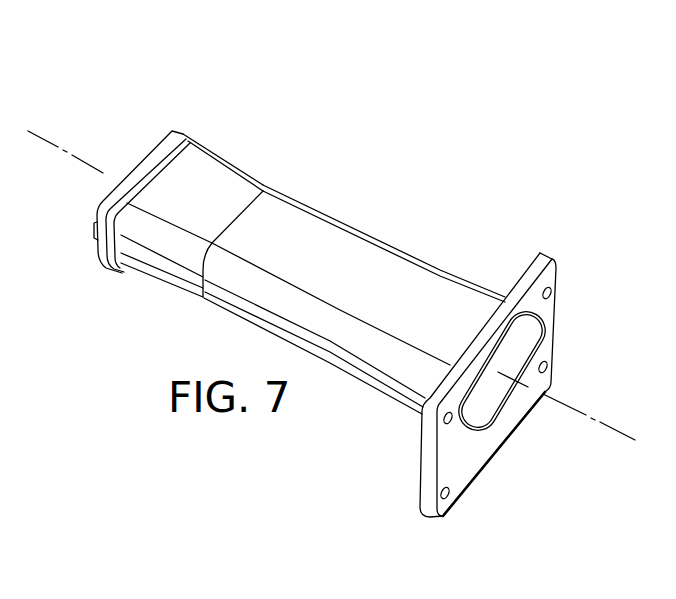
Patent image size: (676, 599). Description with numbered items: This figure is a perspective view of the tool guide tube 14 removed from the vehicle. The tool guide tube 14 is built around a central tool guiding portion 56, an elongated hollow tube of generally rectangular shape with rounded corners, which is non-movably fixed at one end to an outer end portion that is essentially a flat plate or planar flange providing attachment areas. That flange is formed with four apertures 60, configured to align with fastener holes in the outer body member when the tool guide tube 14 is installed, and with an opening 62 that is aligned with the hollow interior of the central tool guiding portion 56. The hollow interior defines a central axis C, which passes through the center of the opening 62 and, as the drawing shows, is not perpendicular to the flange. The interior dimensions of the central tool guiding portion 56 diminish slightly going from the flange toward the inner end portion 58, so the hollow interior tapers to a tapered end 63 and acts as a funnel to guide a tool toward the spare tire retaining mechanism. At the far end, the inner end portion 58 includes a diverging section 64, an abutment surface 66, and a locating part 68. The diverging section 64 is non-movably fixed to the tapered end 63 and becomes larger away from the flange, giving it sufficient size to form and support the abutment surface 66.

The tool guide tube 14 is at (360, 197).
The central tool guiding portion 56 is at (432, 308).
The inner end portion 58 is at (255, 73).
The apertures 60 is at (552, 291).
The opening 62 is at (542, 388).
The tapered end 63 is at (263, 183).
The diverging section 64 is at (215, 147).
The abutment surface 66 is at (160, 131).
The locating part 68 is at (141, 147).
The central axis C is at (612, 431).